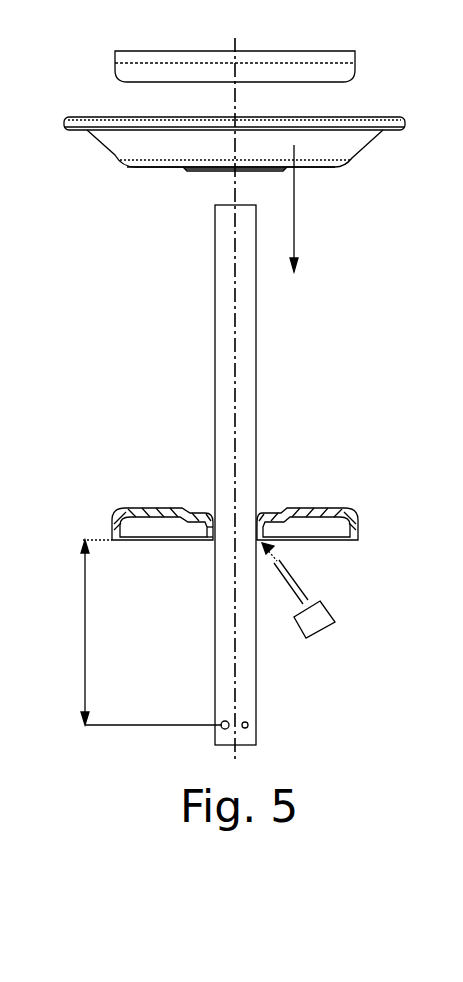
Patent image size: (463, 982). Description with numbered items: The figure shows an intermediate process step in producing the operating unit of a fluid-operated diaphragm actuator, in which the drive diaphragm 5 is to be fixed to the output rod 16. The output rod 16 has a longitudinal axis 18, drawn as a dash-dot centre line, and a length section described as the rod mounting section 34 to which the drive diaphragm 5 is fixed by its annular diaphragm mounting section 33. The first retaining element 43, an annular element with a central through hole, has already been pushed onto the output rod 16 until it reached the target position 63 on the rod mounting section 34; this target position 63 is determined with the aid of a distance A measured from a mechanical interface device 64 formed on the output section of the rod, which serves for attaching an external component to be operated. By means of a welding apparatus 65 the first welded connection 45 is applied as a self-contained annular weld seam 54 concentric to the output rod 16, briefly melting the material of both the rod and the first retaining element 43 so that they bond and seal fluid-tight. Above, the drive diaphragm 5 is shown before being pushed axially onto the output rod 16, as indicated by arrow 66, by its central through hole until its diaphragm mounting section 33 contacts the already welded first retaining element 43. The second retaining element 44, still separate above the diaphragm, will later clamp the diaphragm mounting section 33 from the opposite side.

The drive diaphragm 5 is at (370, 146).
The second retaining element 44 is at (352, 67).
The diaphragm mounting section 33 is at (160, 167).
The arrow 66 is at (294, 210).
The output rod 16 is at (250, 330).
The longitudinal axis 18 is at (235, 372).
The rod mounting section 34 is at (248, 520).
The target position 63 is at (100, 511).
The first retaining element 43 is at (372, 511).
The first welded connection 45 is at (220, 534).
The weld seam 54 is at (198, 579).
The distance A is at (86, 630).
The welding apparatus 65 is at (321, 640).
The mechanical interface device 64 is at (221, 727).